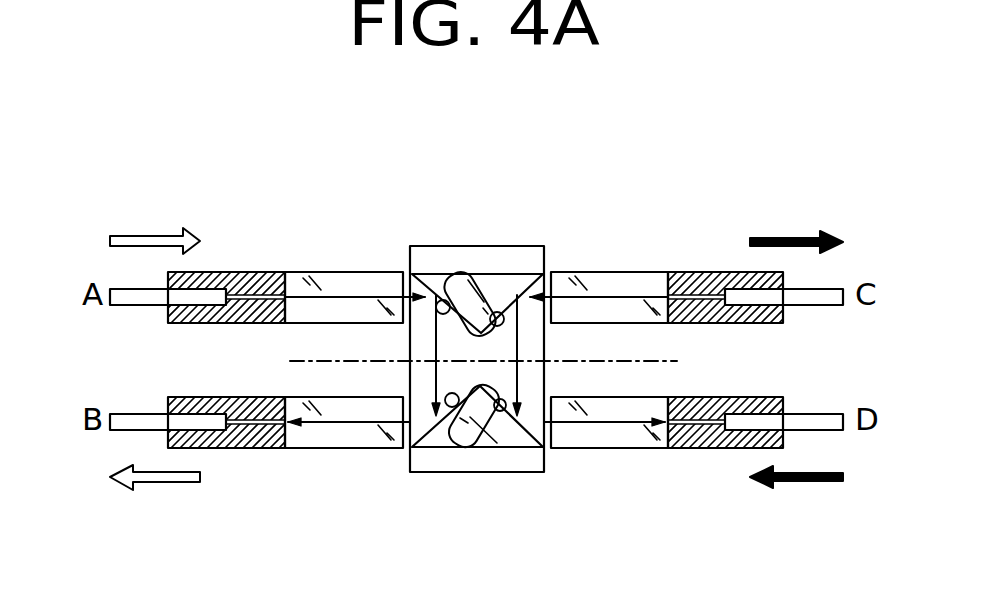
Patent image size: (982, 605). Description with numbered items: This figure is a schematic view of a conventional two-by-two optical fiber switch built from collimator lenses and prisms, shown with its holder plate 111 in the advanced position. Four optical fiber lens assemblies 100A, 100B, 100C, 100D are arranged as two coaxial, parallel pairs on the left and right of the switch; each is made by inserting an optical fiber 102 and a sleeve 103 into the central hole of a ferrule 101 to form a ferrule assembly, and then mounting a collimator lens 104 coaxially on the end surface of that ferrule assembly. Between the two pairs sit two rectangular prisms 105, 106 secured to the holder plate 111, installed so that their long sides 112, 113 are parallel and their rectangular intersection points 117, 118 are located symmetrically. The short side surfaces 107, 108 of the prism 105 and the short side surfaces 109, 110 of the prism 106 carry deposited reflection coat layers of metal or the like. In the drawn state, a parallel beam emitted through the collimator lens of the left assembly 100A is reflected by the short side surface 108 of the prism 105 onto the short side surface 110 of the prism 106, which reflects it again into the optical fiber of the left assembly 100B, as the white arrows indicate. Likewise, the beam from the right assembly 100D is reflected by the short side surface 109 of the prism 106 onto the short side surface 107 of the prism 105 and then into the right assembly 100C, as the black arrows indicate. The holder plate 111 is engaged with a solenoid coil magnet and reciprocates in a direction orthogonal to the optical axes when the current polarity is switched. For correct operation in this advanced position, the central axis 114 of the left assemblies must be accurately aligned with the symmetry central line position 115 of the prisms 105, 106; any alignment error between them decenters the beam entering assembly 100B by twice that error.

The optical fiber lens assembly 100A is at (398, 167).
The optical fiber lens assembly 100B is at (253, 462).
The optical fiber lens assembly 100C is at (688, 250).
The optical fiber lens assembly 100D is at (711, 462).
The ferrule 101 is at (276, 271).
The optical fiber 102 is at (247, 271).
The sleeve 103 is at (193, 271).
The collimator lens 104 is at (352, 271).
The rectangular prism 105 is at (490, 334).
The rectangular prism 106 is at (460, 388).
The short side surface 107 is at (516, 286).
The short side surface 108 is at (441, 292).
The short side surface 109 is at (512, 449).
The short side surface 110 is at (446, 450).
The holder plate 111 is at (408, 460).
The long side 112 is at (481, 290).
The long side 113 is at (470, 450).
The central axis 114 is at (290, 361).
The symmetry central line position 115 is at (677, 361).
The rectangular intersection point 117 is at (456, 290).
The rectangular intersection point 118 is at (485, 450).